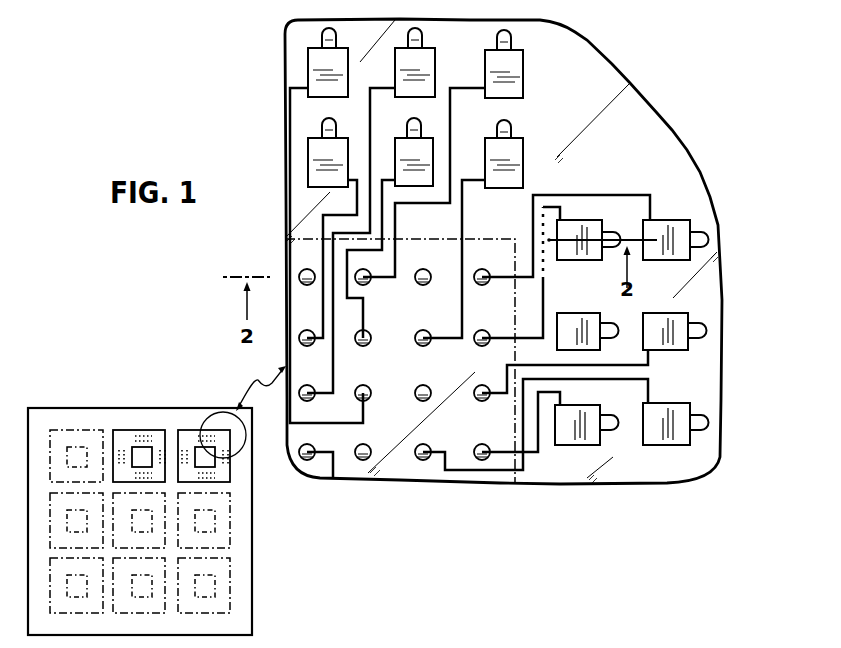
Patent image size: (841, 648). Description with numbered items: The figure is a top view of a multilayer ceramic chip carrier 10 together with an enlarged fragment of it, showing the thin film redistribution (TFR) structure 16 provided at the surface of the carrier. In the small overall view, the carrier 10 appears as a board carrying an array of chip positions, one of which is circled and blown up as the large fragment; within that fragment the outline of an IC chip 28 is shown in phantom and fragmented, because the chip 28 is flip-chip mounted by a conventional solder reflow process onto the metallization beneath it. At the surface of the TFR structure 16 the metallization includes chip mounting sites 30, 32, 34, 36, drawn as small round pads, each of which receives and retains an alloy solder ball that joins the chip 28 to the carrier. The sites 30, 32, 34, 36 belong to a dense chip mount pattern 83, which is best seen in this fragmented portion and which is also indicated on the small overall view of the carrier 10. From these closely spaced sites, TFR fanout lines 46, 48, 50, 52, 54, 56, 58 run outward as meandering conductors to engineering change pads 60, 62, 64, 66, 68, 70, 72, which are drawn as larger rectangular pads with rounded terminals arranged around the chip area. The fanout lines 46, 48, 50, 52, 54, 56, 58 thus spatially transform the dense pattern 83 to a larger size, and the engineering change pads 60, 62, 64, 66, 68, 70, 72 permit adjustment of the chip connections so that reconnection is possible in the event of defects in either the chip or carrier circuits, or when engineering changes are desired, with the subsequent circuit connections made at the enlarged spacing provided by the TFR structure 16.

The carrier 10 is at (262, 568).
The TFR structure 16 is at (637, 120).
The IC chip 28 is at (493, 250).
The chip mounting site 30 is at (488, 285).
The chip mounting site 32 is at (427, 270).
The chip mounting site 34 is at (371, 265).
The chip mounting site 36 is at (311, 258).
The TFR fanout line 46 is at (543, 313).
The TFR fanout line 48 is at (565, 195).
The TFR fanout line 50 is at (463, 291).
The TFR fanout line 52 is at (438, 205).
The TFR fanout line 54 is at (363, 323).
The TFR fanout line 56 is at (334, 380).
The TFR fanout line 58 is at (323, 308).
The engineering change pad 60 is at (597, 222).
The engineering change pad 62 is at (680, 228).
The engineering change pad 64 is at (309, 148).
The engineering change pad 66 is at (395, 147).
The engineering change pad 68 is at (515, 148).
The engineering change pad 70 is at (575, 320).
The engineering change pad 72 is at (588, 445).
The dense chip mount pattern 83 is at (423, 460).